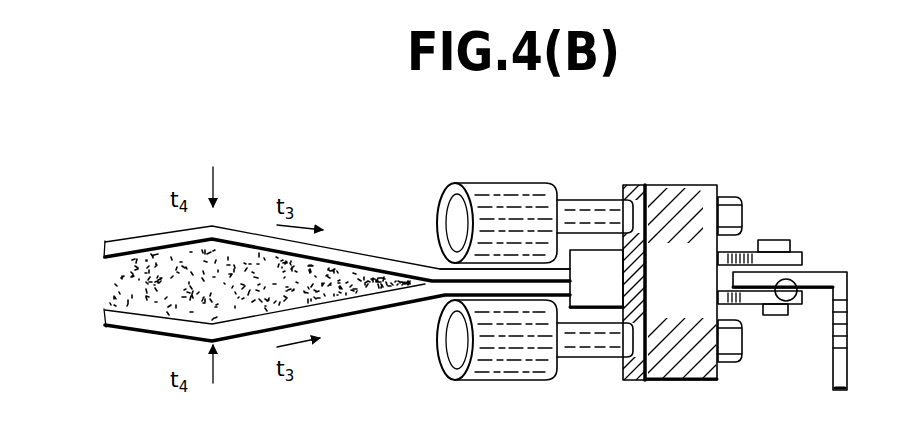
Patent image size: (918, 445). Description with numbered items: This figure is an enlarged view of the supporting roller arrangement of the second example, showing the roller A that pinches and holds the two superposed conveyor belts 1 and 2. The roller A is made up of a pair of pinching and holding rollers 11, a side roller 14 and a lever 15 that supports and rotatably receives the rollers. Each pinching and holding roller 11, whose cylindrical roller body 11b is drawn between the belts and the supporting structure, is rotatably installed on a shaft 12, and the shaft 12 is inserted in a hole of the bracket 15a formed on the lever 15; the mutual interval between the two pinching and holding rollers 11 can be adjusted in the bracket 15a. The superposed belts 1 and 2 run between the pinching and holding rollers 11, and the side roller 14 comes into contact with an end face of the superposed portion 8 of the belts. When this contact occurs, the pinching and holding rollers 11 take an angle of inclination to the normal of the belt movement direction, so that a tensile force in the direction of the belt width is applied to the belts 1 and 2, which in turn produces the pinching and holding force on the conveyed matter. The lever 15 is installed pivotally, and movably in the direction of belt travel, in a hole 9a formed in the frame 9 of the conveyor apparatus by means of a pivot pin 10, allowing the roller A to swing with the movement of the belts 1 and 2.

The belt 1 is at (357, 308).
The belt 2 is at (385, 260).
The superposed portion 8 is at (522, 286).
The frame 9 is at (847, 321).
The hole 9a is at (783, 292).
The pivot pin 10 is at (781, 240).
The pinching and holding roller 11 is at (447, 183).
The roller body 11b is at (498, 183).
The shaft 12 is at (590, 200).
The side roller 14 is at (612, 282).
The lever 15 is at (750, 252).
The bracket 15a is at (697, 185).
The roller A is at (641, 183).